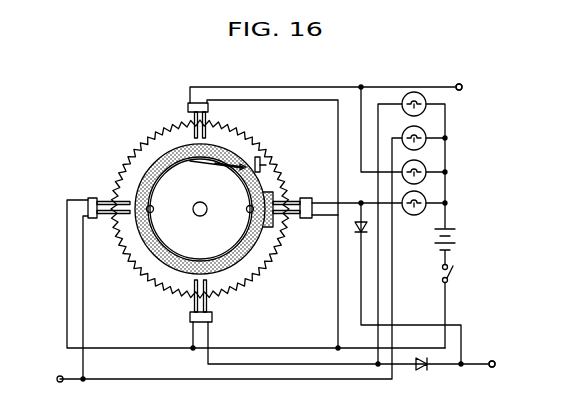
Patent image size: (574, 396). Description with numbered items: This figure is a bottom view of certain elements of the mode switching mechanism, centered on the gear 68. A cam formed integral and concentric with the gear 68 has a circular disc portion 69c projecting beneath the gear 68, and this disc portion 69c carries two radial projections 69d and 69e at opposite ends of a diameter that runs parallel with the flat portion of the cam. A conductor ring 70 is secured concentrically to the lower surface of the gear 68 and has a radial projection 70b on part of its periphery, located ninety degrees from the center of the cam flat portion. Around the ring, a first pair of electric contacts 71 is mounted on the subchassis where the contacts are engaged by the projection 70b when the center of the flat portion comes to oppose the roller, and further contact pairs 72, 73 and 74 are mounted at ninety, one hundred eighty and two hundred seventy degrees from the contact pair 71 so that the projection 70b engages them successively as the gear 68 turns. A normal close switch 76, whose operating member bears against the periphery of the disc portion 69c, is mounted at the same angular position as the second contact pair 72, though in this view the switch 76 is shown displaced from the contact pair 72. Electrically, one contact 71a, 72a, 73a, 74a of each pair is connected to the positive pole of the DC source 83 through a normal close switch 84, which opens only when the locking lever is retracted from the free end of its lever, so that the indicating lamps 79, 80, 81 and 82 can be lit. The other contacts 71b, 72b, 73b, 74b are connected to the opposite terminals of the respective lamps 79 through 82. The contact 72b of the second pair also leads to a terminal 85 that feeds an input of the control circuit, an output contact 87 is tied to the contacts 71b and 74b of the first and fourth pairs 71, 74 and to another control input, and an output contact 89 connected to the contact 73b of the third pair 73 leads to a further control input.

The gear 68 is at (236, 127).
The circular disc portion 69c is at (150, 173).
The radial projection 69d is at (247, 210).
The radial projection 69e is at (152, 207).
The conductor ring 70 is at (150, 268).
The radial projection 70b is at (268, 238).
The electric contact pair 71 is at (305, 197).
The contact 71a is at (312, 218).
The contact 71b is at (317, 203).
The contact pair 72 is at (200, 103).
The contact 72a is at (206, 102).
The contact 72b is at (188, 103).
The contact pair 73 is at (93, 226).
The contact 73a is at (87, 197).
The contact 73b is at (72, 211).
The contact pair 74 is at (212, 316).
The contact 74a is at (190, 322).
The contact 74b is at (212, 322).
The normal close switch 76 is at (257, 159).
The indicating lamp 79 is at (428, 196).
The indicating lamp 80 is at (428, 163).
The indicating lamp 81 is at (428, 129).
The indicating lamp 82 is at (414, 92).
The DC source 83 is at (458, 238).
The normal close switch 84 is at (458, 277).
The terminal 85 is at (466, 87).
The output contact 87 is at (498, 364).
The output contact 89 is at (56, 378).